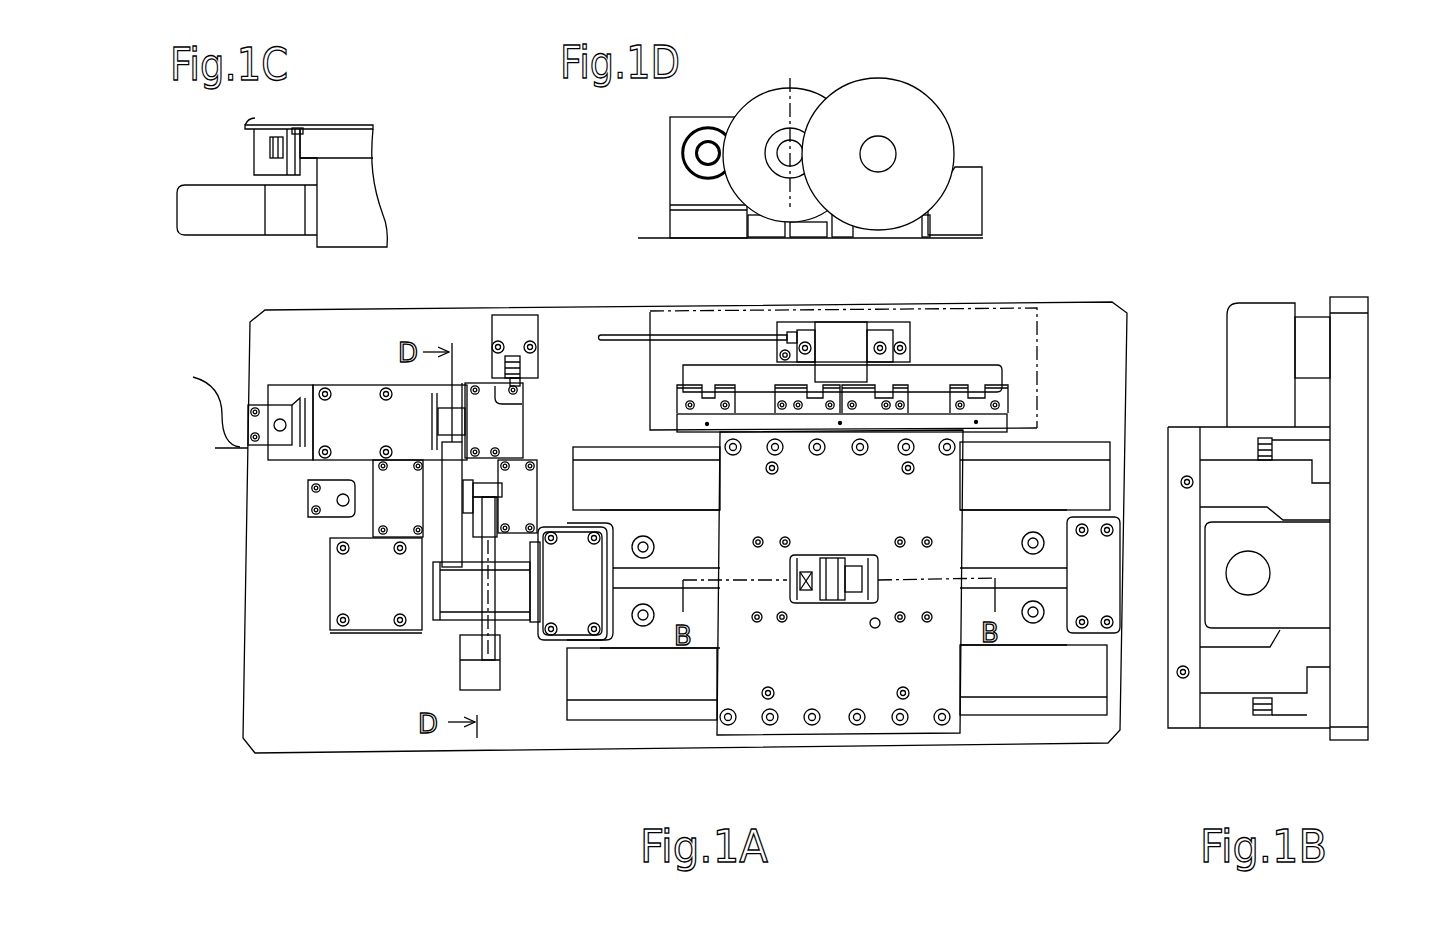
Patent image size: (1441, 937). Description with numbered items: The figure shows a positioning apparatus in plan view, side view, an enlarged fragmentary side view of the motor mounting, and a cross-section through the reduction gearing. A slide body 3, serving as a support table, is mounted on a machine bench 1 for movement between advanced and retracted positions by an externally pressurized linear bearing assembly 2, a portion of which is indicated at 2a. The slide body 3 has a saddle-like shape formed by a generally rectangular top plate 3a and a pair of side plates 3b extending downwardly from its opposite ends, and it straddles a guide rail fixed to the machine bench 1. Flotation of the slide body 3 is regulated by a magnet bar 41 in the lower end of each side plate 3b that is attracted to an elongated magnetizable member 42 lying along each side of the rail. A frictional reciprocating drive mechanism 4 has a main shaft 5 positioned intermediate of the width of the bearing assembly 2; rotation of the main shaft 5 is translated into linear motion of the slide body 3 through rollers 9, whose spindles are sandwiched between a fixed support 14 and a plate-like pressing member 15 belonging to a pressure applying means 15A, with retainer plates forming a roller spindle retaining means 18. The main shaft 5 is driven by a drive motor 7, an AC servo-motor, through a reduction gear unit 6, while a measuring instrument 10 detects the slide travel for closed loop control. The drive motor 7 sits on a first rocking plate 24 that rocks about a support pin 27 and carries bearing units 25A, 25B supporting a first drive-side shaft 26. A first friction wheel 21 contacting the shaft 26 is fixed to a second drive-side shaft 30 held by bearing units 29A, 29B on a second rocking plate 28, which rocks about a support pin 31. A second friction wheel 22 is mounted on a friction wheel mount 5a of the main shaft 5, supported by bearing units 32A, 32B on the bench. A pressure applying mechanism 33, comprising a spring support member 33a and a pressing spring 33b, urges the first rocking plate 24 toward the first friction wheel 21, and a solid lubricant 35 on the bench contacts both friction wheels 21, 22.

In FIG. 1C, the machine bench 1 is at (250, 120).
In FIG. 1B, the machine bench 1 is at (1348, 525).
In FIG. 1A, the machine bench 1 is at (1085, 312).
In FIG. 1B, the externally pressurized linear bearing assembly 2 is at (1243, 732).
In FIG. 1A, the externally pressurized linear bearing assembly 2 is at (810, 735).
In FIG. 1A, the table portion 2a is at (1037, 637).
In FIG. 1B, the slide body 3 is at (1160, 700).
In FIG. 1A, the slide body 3 is at (730, 680).
In FIG. 1B, the top plate 3a is at (1187, 710).
In FIG. 1B, the side plates 3b is at (1217, 443).
In FIG. 1B, the frictional reciprocating drive mechanism 4 is at (1268, 594).
In FIG. 1A, the frictional reciprocating drive mechanism 4 is at (847, 613).
In FIG. 1B, the main shaft 5 is at (1250, 580).
In FIG. 1A, the main shaft 5 is at (683, 575).
In FIG. 1A, the friction wheel mount 5a is at (512, 595).
In FIG. 1D, the reduction gear unit 6 is at (872, 72).
In FIG. 1A, the reduction gear unit 6 is at (322, 627).
In FIG. 1C, the drive motor 7 is at (222, 218).
In FIG. 1A, the drive motor 7 is at (202, 406).
In FIG. 1A, the rollers 9 is at (833, 597).
In FIG. 1B, the measuring instrument 10 is at (1262, 317).
In FIG. 1A, the measuring instrument 10 is at (933, 373).
In FIG. 1A, the fixed support 14 is at (797, 580).
In FIG. 1A, the pressing member 15 is at (878, 600).
In FIG. 1A, the pressure applying means 15A is at (881, 568).
In FIG. 1A, the roller spindle retaining means 18 is at (800, 606).
In FIG. 1D, the first friction wheel 21 is at (752, 123).
In FIG. 1A, the first friction wheel 21 is at (355, 613).
In FIG. 1D, the second friction wheel 22 is at (903, 98).
In FIG. 1A, the second friction wheel 22 is at (473, 623).
In FIG. 1C, the first rocking plate 24 is at (353, 140).
In FIG. 1A, the first rocking plate 24 is at (292, 393).
In FIG. 1A, the bearing unit 25A is at (355, 400).
In FIG. 1A, the bearing unit 25B is at (495, 428).
In FIG. 1D, the first drive-side shaft 26 is at (700, 152).
In FIG. 1A, the first drive-side shaft 26 is at (455, 343).
In FIG. 1C, the support pin 27 is at (293, 127).
In FIG. 1A, the support pin 27 is at (278, 428).
In FIG. 1A, the second rocking plate 28 is at (343, 468).
In FIG. 1A, the bearing unit 29A is at (378, 503).
In FIG. 1A, the bearing unit 29B is at (545, 472).
In FIG. 1D, the second drive-side shaft 30 is at (792, 148).
In FIG. 1A, the second drive-side shaft 30 is at (520, 460).
In FIG. 1A, the support pin 31 is at (343, 502).
In FIG. 1A, the bearing unit 32A is at (353, 615).
In FIG. 1A, the bearing unit 32B is at (585, 612).
In FIG. 1A, the pressure applying mechanism 33 is at (537, 325).
In FIG. 1A, the spring support member 33a is at (538, 330).
In FIG. 1A, the pressing spring 33b is at (548, 288).
In FIG. 1D, the solid lubricant 35 is at (967, 175).
In FIG. 1A, the solid lubricant 35 is at (492, 675).
In FIG. 1B, the magnet bar 41 is at (1277, 437).
In FIG. 1B, the magnetizable member 42 is at (1313, 453).
In FIG. 1A, the magnetizable member 42 is at (1055, 452).